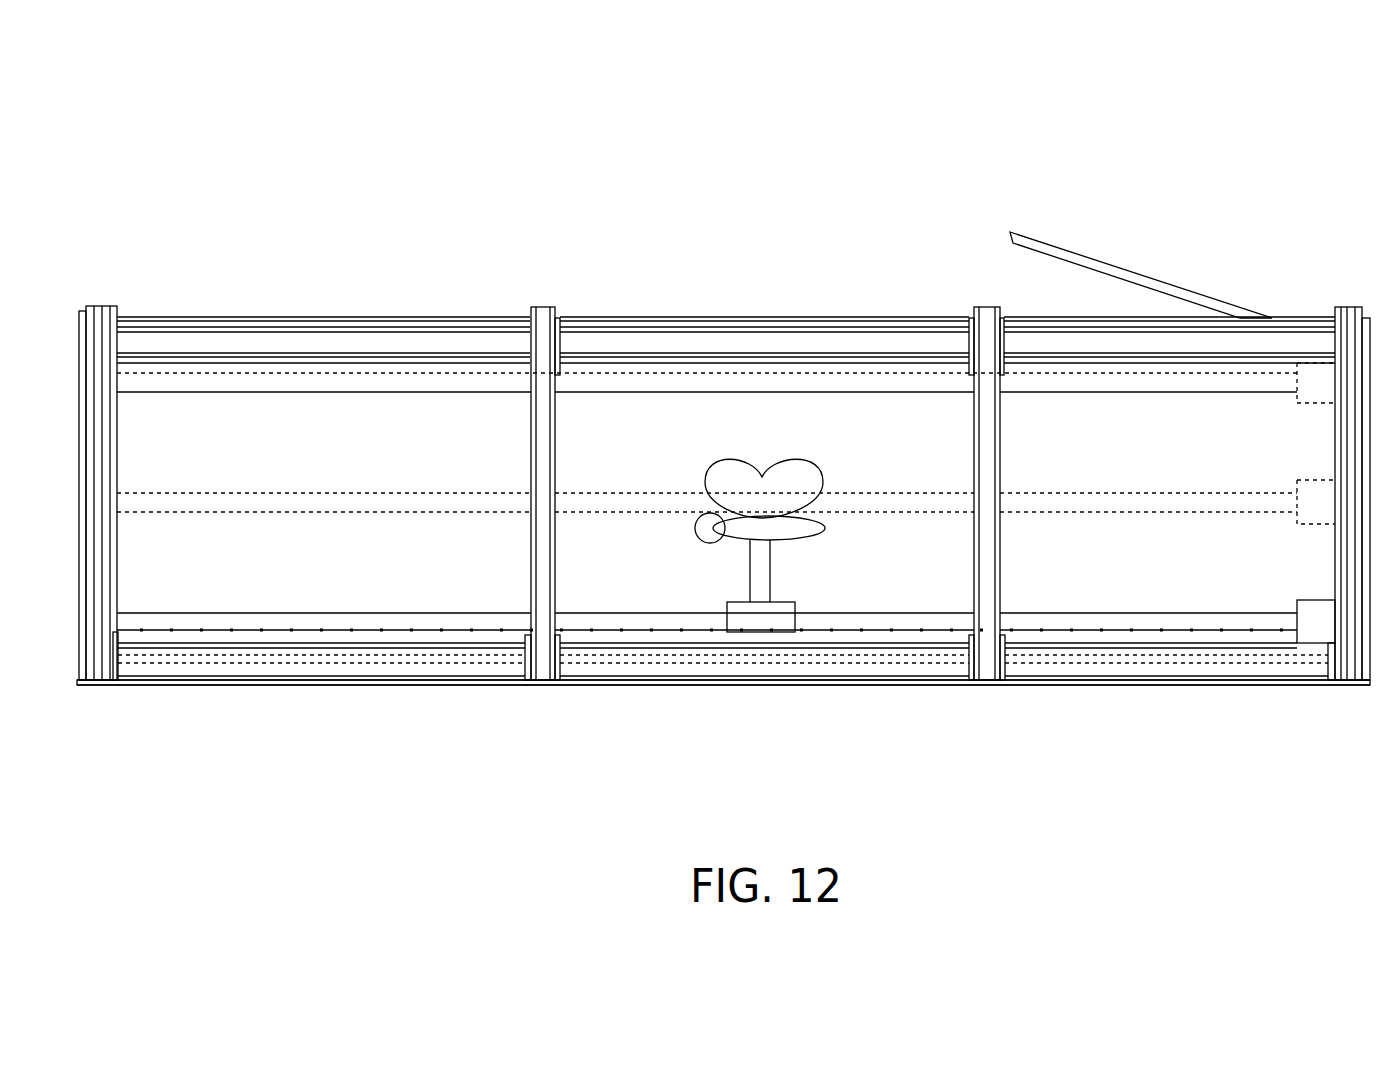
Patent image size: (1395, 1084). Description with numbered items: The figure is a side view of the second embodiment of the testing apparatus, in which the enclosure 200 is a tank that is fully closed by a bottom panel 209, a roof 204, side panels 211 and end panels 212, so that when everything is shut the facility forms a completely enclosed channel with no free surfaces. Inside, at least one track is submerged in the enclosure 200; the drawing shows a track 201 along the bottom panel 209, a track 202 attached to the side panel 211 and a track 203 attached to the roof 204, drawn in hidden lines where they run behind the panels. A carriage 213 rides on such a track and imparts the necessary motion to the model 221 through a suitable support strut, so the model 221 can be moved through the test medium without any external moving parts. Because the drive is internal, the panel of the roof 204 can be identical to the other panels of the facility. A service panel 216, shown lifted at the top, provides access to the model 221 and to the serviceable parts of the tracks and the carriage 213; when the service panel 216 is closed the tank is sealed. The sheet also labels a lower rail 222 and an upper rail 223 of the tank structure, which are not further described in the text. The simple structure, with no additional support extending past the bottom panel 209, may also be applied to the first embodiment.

The enclosure 200 is at (884, 308).
The track 201 is at (385, 637).
The track 202 is at (347, 500).
The track 203 is at (258, 367).
The roof 204 is at (613, 318).
The bottom panel 209 is at (735, 678).
The side panel 211 is at (460, 473).
The end panel 212 is at (1367, 318).
The carriage 213 is at (758, 618).
The service panel 216 is at (1092, 267).
The model 221 is at (822, 500).
The lower rail 222 is at (675, 620).
The second rail 223 is at (695, 385).